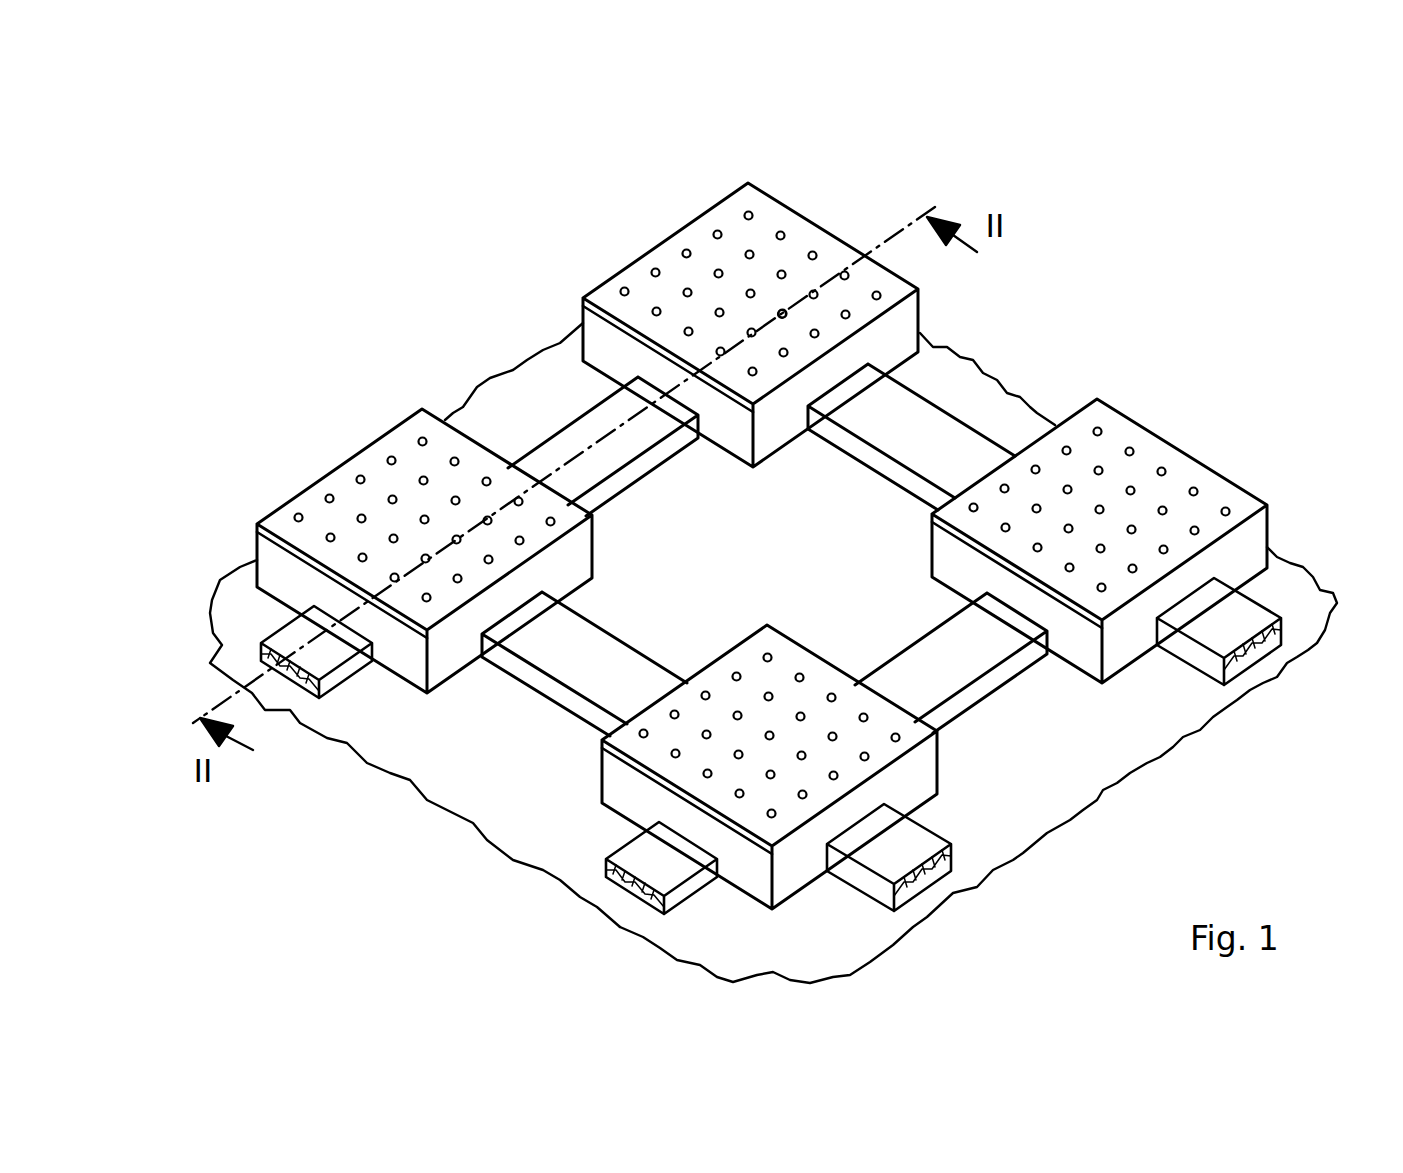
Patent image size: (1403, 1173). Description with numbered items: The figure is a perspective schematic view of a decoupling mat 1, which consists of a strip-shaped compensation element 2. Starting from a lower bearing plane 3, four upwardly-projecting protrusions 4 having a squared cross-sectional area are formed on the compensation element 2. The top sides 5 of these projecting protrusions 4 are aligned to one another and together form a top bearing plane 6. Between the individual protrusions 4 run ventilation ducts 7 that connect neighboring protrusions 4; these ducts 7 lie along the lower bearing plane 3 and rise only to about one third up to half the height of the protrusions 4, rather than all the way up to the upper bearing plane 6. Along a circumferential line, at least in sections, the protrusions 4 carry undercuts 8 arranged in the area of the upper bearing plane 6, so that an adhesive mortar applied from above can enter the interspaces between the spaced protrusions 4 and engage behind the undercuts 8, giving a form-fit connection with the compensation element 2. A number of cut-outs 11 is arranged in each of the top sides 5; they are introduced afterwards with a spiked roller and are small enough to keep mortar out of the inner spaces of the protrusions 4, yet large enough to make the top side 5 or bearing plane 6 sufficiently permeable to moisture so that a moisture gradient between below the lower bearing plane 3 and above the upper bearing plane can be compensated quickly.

The decoupling mat 1 is at (750, 524).
The compensation element 2 is at (1102, 737).
The lower bearing plane 3 is at (1025, 785).
The projecting protrusions 4 is at (278, 565).
The top sides 5 is at (827, 259).
The top bearing plane 6 is at (712, 234).
The ventilation ducts 7 is at (590, 430).
The undercuts 8 is at (605, 305).
The cut-outs 11 is at (780, 310).